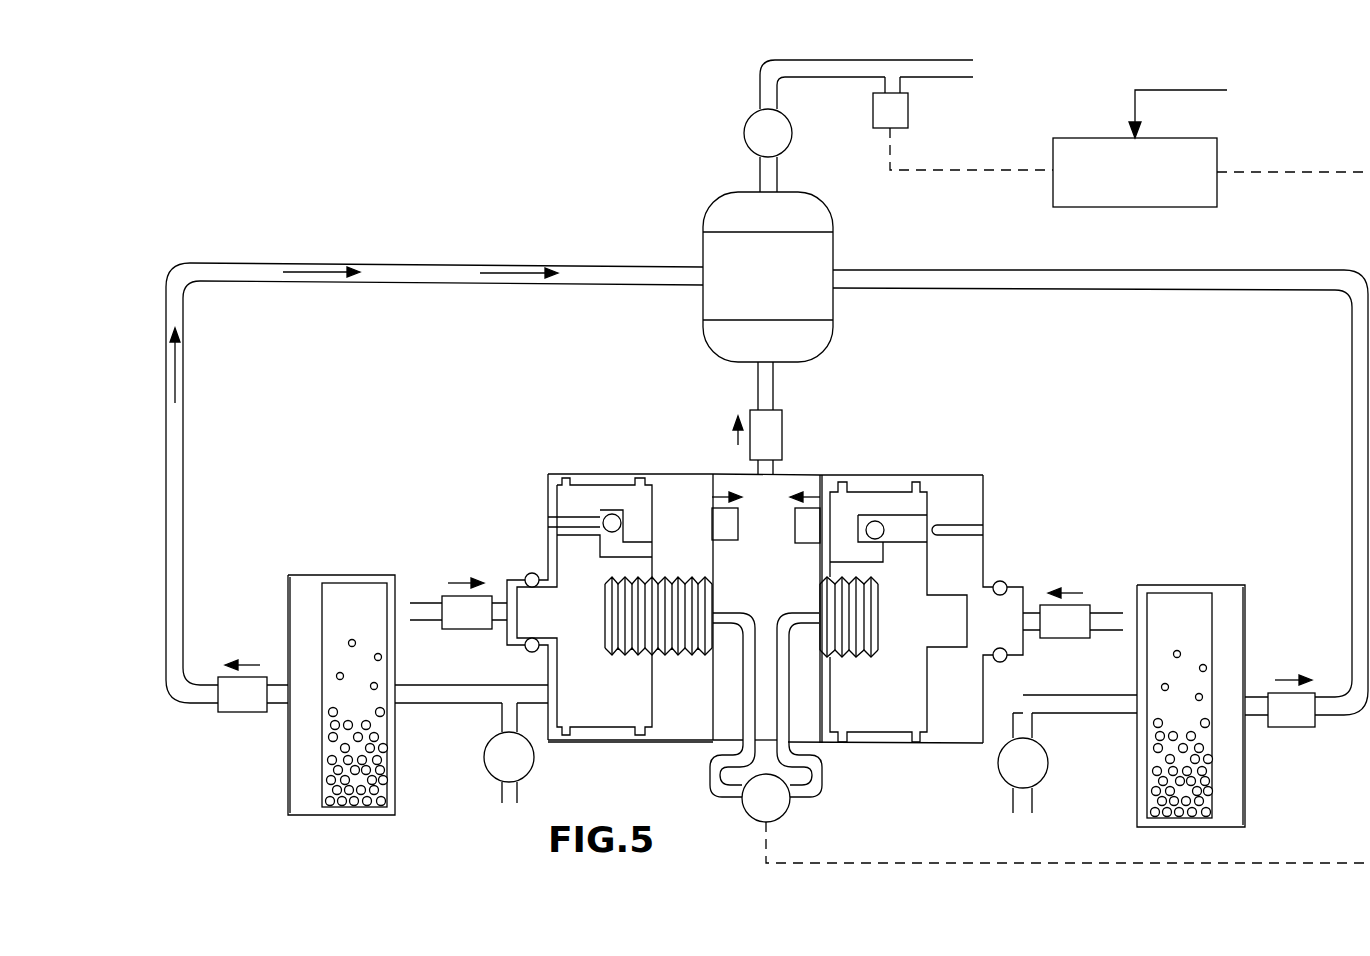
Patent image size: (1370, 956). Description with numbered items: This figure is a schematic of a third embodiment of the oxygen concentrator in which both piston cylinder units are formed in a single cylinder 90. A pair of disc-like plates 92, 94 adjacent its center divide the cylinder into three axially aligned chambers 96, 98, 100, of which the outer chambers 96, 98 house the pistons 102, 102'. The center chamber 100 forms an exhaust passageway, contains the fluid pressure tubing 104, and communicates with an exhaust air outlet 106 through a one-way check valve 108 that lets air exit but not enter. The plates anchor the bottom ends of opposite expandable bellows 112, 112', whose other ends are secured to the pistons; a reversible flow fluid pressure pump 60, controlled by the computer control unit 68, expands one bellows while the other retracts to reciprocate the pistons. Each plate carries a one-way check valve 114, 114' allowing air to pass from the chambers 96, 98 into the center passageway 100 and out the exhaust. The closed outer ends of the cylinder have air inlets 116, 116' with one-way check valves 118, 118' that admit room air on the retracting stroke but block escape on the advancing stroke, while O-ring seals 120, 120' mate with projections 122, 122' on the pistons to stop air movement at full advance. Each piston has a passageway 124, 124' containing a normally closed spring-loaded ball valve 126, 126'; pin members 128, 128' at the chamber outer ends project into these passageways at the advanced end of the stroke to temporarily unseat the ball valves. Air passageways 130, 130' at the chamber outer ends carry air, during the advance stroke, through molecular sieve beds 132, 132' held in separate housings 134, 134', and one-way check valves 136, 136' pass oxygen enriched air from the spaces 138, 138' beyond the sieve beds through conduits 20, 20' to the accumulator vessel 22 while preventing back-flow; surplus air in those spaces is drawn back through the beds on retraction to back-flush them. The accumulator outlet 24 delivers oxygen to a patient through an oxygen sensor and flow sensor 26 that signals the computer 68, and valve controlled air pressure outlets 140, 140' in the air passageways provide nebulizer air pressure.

The conduit 20 is at (434, 454).
The conduit 20' is at (1100, 464).
The oxygen enriched air accumulator vessel 22 is at (703, 243).
The outlet of the accumulator vessel 24 is at (758, 177).
The oxygen sensor and flow sensor 26 is at (908, 112).
The computer control unit 68 is at (1078, 138).
The reversible flow fluid pressure pump 60 is at (746, 815).
The single cylinder 90 is at (548, 490).
The disc-like plate 92 is at (712, 715).
The disc-like plate 94 is at (828, 692).
The chamber 96 is at (665, 730).
The chamber 98 is at (975, 745).
The center chamber 100 is at (730, 566).
The piston 102 is at (584, 629).
The piston 102' is at (898, 632).
The fluid pressure tubing 104 is at (775, 640).
The exhaust air outlet 106 is at (775, 395).
The one-way check valve 108 is at (783, 437).
The expandable bellows 112 is at (658, 642).
The expandable bellows 112' is at (889, 617).
The one-way check valve 114 is at (707, 488).
The one-way check valve 114' is at (786, 534).
The air inlet 116 is at (456, 584).
The air inlet 116' is at (1079, 592).
The one-way check valve 118 is at (447, 633).
The one-way check valve 118' is at (1065, 646).
The O-ring seal 120 is at (516, 546).
The O-ring seal 120' is at (1022, 560).
The projection 122 is at (503, 660).
The projection 122' is at (970, 682).
The passageway 124 is at (604, 565).
The passageway 124' is at (910, 502).
The spring-loaded ball valve 126 is at (626, 479).
The spring-loaded ball valve 126' is at (886, 489).
The pin member 128 is at (574, 479).
The pin member 128' is at (990, 502).
The air passageway 130 is at (471, 724).
The air passageway 130' is at (1075, 734).
The molecular sieve bed 132 is at (355, 672).
The molecular sieve bed 132' is at (1180, 683).
The housing 134 is at (305, 695).
The housing 134' is at (1233, 706).
The one-way check valve 136 is at (242, 724).
The one-way check valve 136' is at (1294, 738).
The space 138 is at (268, 695).
The space 138' is at (1271, 706).
The valve controlled air pressure outlet 140 is at (503, 778).
The valve controlled air pressure outlet 140' is at (1015, 785).